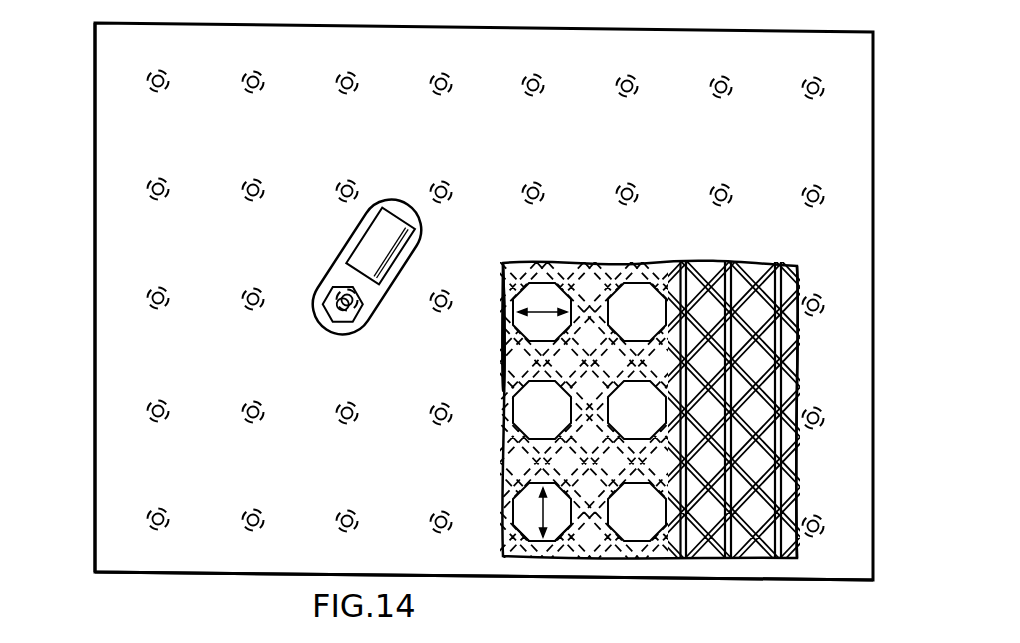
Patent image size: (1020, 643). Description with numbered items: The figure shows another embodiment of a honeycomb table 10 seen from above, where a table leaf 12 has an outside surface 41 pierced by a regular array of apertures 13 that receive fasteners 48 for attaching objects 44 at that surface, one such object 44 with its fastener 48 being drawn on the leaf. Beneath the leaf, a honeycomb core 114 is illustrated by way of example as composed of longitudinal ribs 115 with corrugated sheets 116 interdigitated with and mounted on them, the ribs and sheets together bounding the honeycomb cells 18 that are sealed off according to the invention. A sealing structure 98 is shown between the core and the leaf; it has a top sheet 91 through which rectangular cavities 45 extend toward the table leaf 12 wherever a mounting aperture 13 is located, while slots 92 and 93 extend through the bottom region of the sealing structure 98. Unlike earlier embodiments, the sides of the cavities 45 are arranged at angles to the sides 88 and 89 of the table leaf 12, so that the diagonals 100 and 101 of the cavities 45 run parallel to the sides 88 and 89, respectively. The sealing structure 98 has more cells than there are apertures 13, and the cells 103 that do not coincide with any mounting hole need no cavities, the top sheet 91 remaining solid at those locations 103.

The honeycomb table 10 is at (95, 320).
The table leaf 12 is at (110, 237).
The apertures 13 is at (244, 414).
The honeycomb cells 18 is at (636, 410).
The outside surface 41 is at (386, 277).
The objects 44 is at (380, 246).
The cavities 45 is at (508, 438).
The fasteners 48 is at (343, 304).
The side of the table leaf 88 is at (296, 578).
The side of the table leaf 89 is at (95, 449).
The top sheet 91 is at (505, 365).
The slots 92 is at (614, 258).
The slots 93 is at (636, 410).
The sealing structure 98 is at (563, 548).
The diagonal 100 is at (515, 314).
The diagonal 101 is at (528, 533).
The cells of the sealing structure 103 is at (588, 335).
The honeycomb core 114 is at (790, 343).
The longitudinal ribs 115 is at (803, 445).
The corrugated sheets 116 is at (800, 452).